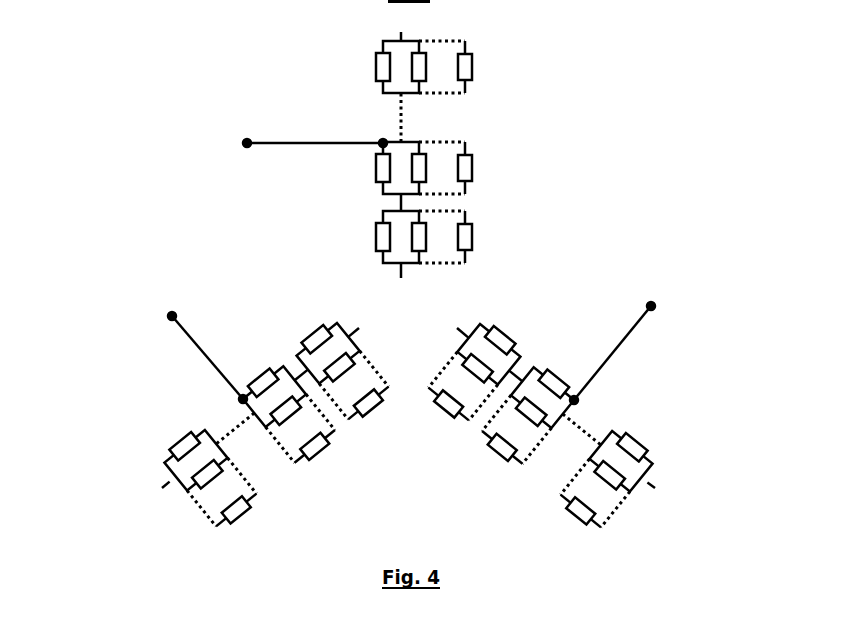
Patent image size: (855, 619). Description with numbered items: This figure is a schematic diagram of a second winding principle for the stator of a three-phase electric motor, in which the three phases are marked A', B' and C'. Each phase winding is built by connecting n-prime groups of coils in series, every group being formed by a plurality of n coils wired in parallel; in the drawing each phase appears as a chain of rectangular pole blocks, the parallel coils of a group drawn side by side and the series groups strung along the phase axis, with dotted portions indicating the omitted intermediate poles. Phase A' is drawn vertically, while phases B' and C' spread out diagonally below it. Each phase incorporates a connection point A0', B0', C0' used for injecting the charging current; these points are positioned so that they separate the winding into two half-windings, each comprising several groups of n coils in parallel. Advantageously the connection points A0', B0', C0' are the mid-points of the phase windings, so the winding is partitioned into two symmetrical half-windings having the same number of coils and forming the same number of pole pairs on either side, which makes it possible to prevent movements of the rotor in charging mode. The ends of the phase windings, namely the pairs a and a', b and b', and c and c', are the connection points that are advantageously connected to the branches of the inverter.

The phase winding end connection point a is at (399, 22).
The phase winding end connection point a' is at (406, 288).
The connection point A0' is at (289, 144).
The phase A' is at (359, 158).
The phase B' is at (254, 406).
The connection point C0' is at (203, 342).
The phase winding end connection point c is at (160, 486).
The phase winding end connection point c' is at (367, 321).
The phase C' is at (587, 379).
The connection point B0' is at (624, 335).
The phase winding end connection point b is at (657, 489).
The phase winding end connection point b' is at (451, 321).